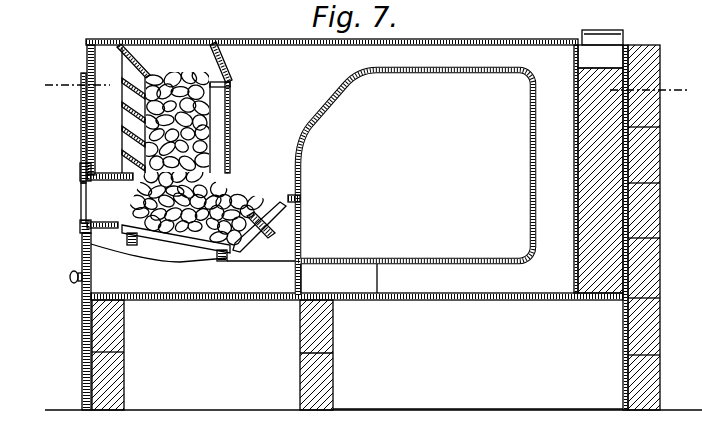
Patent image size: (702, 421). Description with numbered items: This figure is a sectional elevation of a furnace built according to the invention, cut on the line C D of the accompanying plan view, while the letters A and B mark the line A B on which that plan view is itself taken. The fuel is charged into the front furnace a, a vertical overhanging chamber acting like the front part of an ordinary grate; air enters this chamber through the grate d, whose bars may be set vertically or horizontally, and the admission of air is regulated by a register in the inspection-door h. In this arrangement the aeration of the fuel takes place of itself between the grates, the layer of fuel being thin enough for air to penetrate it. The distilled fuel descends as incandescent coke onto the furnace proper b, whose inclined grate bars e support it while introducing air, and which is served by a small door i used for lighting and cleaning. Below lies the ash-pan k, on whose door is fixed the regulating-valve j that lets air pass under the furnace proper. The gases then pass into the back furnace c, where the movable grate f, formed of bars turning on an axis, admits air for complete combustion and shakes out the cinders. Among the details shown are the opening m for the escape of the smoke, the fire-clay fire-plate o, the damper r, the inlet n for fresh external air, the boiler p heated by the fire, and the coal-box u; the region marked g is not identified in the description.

The section line A B A is at (77, 76).
The section line A B is at (650, 91).
The front furnace a is at (168, 117).
The furnace proper b is at (222, 191).
The back furnace c is at (248, 204).
The grate d is at (133, 142).
The grate bars e is at (195, 246).
The movable grate f is at (263, 236).
The flue chamber g is at (461, 355).
The inspection-door h is at (83, 127).
The door i is at (146, 157).
The regulating-valve j is at (86, 271).
The ash-pan k is at (193, 261).
The opening for the escape of the smoke m is at (339, 278).
The inlet for fresh external air n is at (415, 182).
The fire-clay fire-plate o is at (300, 136).
The boiler p is at (587, 133).
The damper r is at (225, 62).
The coal-box u is at (165, 355).